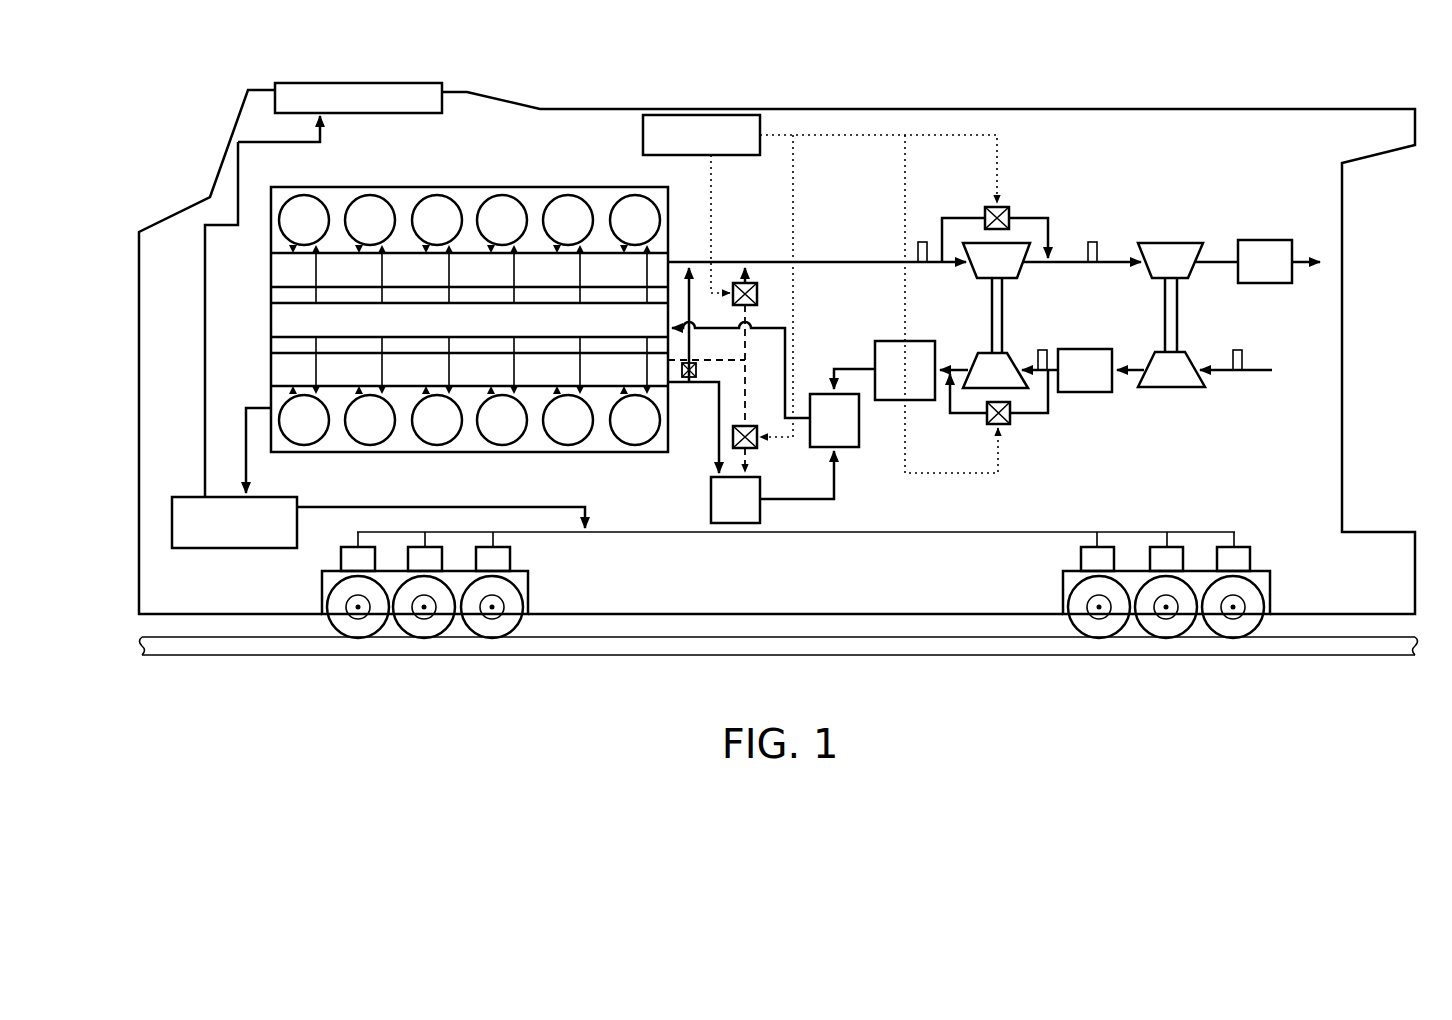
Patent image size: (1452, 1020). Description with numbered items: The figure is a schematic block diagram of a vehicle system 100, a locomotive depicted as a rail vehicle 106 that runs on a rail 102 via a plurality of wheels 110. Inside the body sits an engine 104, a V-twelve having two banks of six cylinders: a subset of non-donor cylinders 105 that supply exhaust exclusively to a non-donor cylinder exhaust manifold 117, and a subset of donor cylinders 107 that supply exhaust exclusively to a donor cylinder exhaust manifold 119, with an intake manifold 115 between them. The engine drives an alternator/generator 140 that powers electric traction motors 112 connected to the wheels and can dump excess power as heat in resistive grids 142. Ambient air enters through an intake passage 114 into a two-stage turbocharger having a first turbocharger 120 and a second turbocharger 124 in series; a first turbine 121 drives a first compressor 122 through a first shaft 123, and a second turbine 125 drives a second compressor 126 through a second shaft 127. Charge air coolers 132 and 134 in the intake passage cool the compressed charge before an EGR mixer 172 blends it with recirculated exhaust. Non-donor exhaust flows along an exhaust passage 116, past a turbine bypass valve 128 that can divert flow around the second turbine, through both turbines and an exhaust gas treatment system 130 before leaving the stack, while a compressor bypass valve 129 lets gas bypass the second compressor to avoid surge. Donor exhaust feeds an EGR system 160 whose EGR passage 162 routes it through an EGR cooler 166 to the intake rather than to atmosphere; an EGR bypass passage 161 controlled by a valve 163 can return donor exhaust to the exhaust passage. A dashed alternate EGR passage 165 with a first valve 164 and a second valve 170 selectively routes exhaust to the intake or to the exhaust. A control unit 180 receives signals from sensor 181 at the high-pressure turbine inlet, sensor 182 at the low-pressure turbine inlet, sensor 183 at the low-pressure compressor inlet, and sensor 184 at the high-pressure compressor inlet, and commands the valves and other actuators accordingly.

The vehicle system 100 is at (1244, 82).
The rail 102 is at (1335, 656).
The engine 104 is at (446, 315).
The non-donor cylinders 105 is at (437, 196).
The rail vehicle 106 is at (1100, 108).
The donor cylinders 107 is at (440, 446).
The wheels 110 is at (515, 600).
The electric traction motors 112 is at (511, 560).
The intake passage 114 is at (1220, 372).
The intake manifold 115 is at (469, 320).
The exhaust passage 116 is at (829, 261).
The non-donor cylinder exhaust manifold 117 is at (271, 272).
The donor cylinder exhaust manifold 119 is at (271, 372).
The first turbocharger 120 is at (1103, 343).
The first turbine 121 is at (1170, 260).
The first compressor 122 is at (1171, 369).
The first shaft 123 is at (1180, 336).
The second turbocharger 124 is at (1021, 412).
The second turbine 125 is at (996, 260).
The second compressor 126 is at (995, 370).
The second shaft 127 is at (1003, 336).
The turbine bypass valve 128 is at (1009, 214).
The compressor bypass valve 129 is at (985, 415).
The exhaust gas treatment system 130 is at (1258, 261).
The charge air cooler 132 is at (1083, 370).
The charge air cooler 134 is at (901, 370).
The alternator/generator 140 is at (378, 478).
The resistive grids 142 is at (427, 83).
The EGR system 160 is at (786, 393).
The EGR bypass passage 161 is at (689, 288).
The EGR passage 162 is at (717, 406).
The valve 163 is at (690, 363).
The first valve 164 is at (752, 294).
The alternate EGR passage 165 is at (748, 362).
The EGR cooler 166 is at (772, 487).
The second valve 170 is at (749, 449).
The EGR mixer 172 is at (765, 384).
The control unit 180 is at (820, 294).
The sensor 181 is at (922, 242).
The sensor 182 is at (1092, 242).
The sensor 183 is at (1238, 350).
The sensor 184 is at (1042, 350).